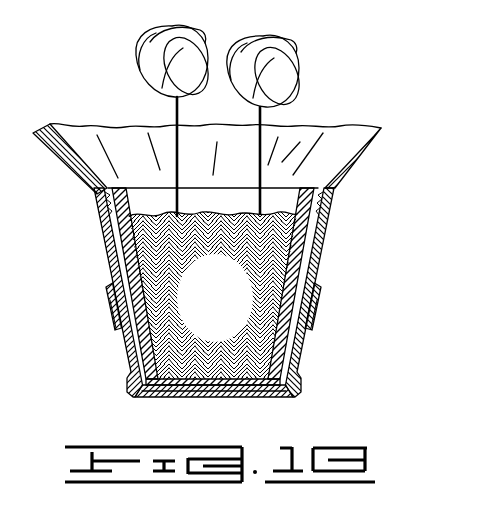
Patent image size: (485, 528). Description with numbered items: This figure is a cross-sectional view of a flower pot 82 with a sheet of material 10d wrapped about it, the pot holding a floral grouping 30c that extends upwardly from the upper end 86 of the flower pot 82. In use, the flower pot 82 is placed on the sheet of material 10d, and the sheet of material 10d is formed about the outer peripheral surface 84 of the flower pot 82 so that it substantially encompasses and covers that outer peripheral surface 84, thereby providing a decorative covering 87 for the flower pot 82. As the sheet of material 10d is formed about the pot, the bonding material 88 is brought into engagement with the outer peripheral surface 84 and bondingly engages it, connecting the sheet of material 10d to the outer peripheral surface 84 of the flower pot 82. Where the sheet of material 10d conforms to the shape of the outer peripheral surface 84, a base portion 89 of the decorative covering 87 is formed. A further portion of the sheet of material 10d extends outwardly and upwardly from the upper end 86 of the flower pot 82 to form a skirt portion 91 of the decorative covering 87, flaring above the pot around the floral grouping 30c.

The floral grouping 30c is at (300, 45).
The decorative covering 87 is at (376, 72).
The upper end 86 is at (303, 128).
The skirt portion 91 is at (371, 157).
The sheet of material 10d is at (333, 192).
The flower pot 82 is at (301, 230).
The bonding material 88 is at (97, 216).
The base portion 89 is at (112, 302).
The outer peripheral surface 84 is at (123, 329).